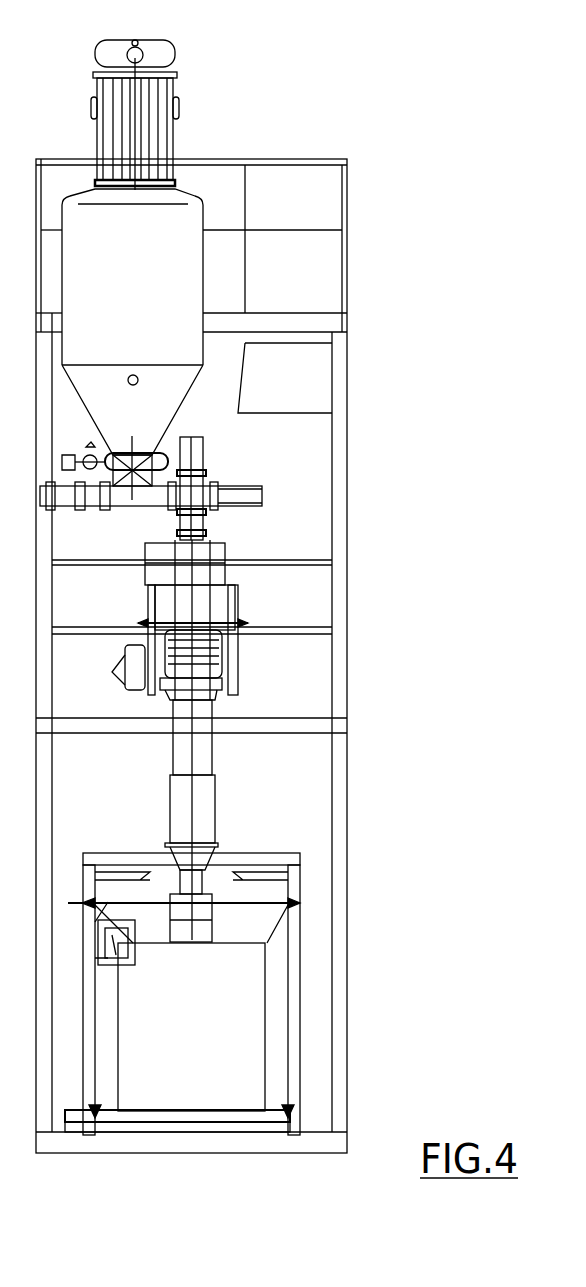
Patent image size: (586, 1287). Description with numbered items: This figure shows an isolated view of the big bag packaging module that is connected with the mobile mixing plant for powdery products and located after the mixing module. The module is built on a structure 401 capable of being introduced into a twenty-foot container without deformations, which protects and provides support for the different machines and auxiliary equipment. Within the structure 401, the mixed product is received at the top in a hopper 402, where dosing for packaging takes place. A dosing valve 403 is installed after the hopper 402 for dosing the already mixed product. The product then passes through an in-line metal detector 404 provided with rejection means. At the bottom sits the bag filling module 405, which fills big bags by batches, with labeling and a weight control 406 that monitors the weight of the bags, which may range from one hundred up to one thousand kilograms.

The structure 401 is at (292, 178).
The hopper 402 is at (160, 273).
The dosing valve 403 is at (120, 463).
The in-line metal detector 404 is at (250, 598).
The bag filling module 405 is at (180, 965).
The weight control 406 is at (200, 1128).